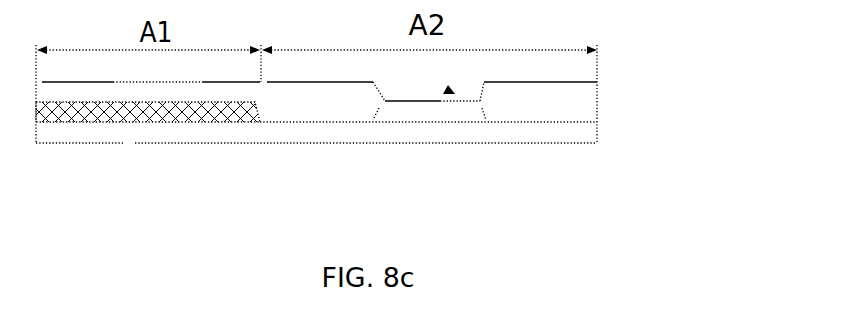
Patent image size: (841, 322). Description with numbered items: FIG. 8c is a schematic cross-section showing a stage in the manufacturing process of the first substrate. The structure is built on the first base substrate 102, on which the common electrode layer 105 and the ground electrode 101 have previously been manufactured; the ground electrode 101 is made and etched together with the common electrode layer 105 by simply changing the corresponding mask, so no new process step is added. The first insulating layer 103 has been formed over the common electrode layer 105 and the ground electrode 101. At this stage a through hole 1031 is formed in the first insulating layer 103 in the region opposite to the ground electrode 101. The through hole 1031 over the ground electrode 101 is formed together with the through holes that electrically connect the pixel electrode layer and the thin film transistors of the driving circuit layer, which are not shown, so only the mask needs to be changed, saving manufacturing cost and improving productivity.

The ground electrode 101 is at (400, 122).
The first base substrate 102 is at (598, 133).
The first insulating layer 103 is at (598, 108).
The through hole 1031 is at (449, 96).
The common electrode layer 105 is at (138, 122).